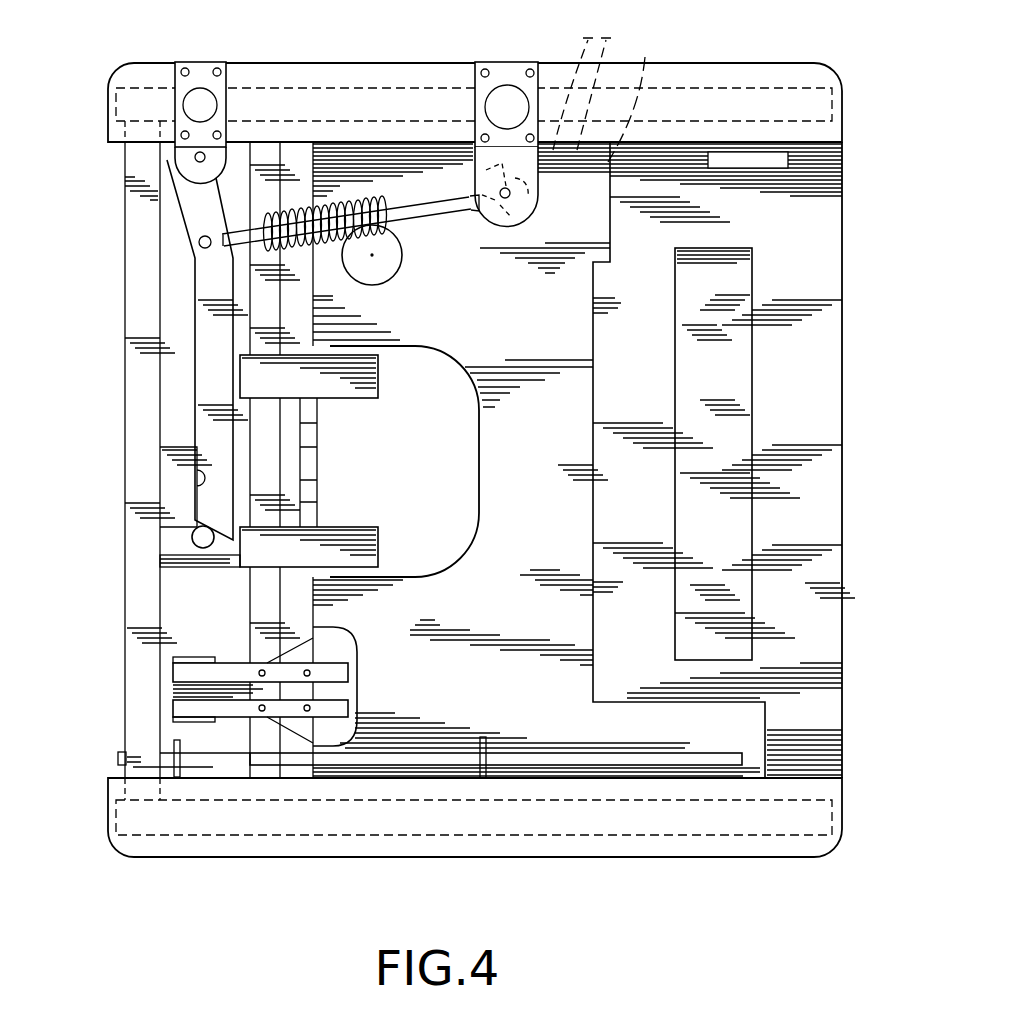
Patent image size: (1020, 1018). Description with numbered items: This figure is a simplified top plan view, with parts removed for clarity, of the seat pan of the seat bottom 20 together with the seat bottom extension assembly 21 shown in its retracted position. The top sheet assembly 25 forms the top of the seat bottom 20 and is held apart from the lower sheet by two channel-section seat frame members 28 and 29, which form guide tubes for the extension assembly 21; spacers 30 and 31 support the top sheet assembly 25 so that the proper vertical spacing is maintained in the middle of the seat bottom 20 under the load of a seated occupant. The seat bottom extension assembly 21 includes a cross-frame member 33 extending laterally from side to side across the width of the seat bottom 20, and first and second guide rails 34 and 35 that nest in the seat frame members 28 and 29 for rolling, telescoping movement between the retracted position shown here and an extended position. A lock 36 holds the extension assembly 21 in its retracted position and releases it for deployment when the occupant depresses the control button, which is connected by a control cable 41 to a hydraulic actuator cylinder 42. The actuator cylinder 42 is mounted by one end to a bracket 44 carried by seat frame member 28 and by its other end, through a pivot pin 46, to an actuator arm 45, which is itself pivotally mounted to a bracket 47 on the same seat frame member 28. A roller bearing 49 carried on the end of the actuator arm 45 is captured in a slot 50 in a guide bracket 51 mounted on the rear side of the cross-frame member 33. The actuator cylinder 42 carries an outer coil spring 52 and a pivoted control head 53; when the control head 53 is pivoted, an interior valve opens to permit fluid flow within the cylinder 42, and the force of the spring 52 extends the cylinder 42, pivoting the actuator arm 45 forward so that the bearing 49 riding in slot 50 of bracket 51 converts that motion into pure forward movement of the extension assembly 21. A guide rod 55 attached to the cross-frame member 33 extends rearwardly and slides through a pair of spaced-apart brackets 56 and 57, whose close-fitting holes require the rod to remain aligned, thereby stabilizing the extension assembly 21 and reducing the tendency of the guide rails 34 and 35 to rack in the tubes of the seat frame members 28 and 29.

The seat bottom 20 is at (843, 425).
The seat bottom extension assembly 21 is at (125, 448).
The top sheet assembly 25 is at (808, 245).
The seat frame member 28 is at (701, 80).
The seat frame member 29 is at (266, 842).
The spacer 30 is at (260, 375).
The spacer 31 is at (260, 552).
The cross-frame member 33 is at (135, 165).
The first guide rail 34 is at (417, 104).
The second guide rail 35 is at (194, 806).
The lock 36 is at (200, 673).
The control cable 41 is at (577, 50).
The hydraulic actuator cylinder 42 is at (255, 147).
The bracket 44 is at (475, 88).
The actuator arm 45 is at (210, 282).
The pivot pin 46 is at (199, 241).
The bracket 47 is at (198, 77).
The roller bearing 49 is at (192, 537).
The slot 50 is at (197, 490).
The guide bracket 51 is at (160, 445).
The outer coil spring 52 is at (332, 197).
The control head 53 is at (636, 93).
The guide rod 55 is at (550, 757).
The bracket 56 is at (176, 745).
The bracket 57 is at (478, 750).